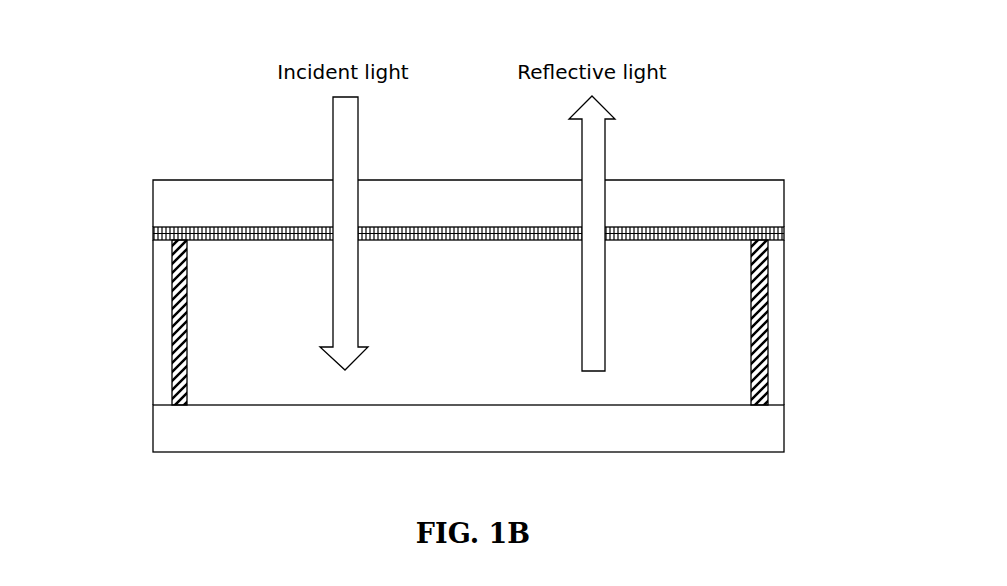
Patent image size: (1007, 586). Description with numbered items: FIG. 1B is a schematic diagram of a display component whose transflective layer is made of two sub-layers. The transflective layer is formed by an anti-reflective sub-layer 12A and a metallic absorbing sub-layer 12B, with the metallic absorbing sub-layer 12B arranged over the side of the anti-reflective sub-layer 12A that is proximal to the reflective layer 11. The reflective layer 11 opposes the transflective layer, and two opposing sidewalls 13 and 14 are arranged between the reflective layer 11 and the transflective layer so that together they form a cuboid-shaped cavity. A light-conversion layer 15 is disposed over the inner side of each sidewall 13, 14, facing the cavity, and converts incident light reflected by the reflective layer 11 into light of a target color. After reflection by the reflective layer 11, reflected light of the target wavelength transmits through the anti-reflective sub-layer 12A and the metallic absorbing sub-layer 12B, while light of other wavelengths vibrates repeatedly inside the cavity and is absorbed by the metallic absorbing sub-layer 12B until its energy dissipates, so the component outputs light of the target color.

The reflective layer 11 is at (767, 432).
The anti-reflective sub-layer 12A is at (759, 197).
The metallic absorbing sub-layer 12B is at (784, 232).
The sidewall 13 is at (163, 308).
The sidewall 14 is at (780, 284).
The light-conversion layer 15 is at (175, 378).